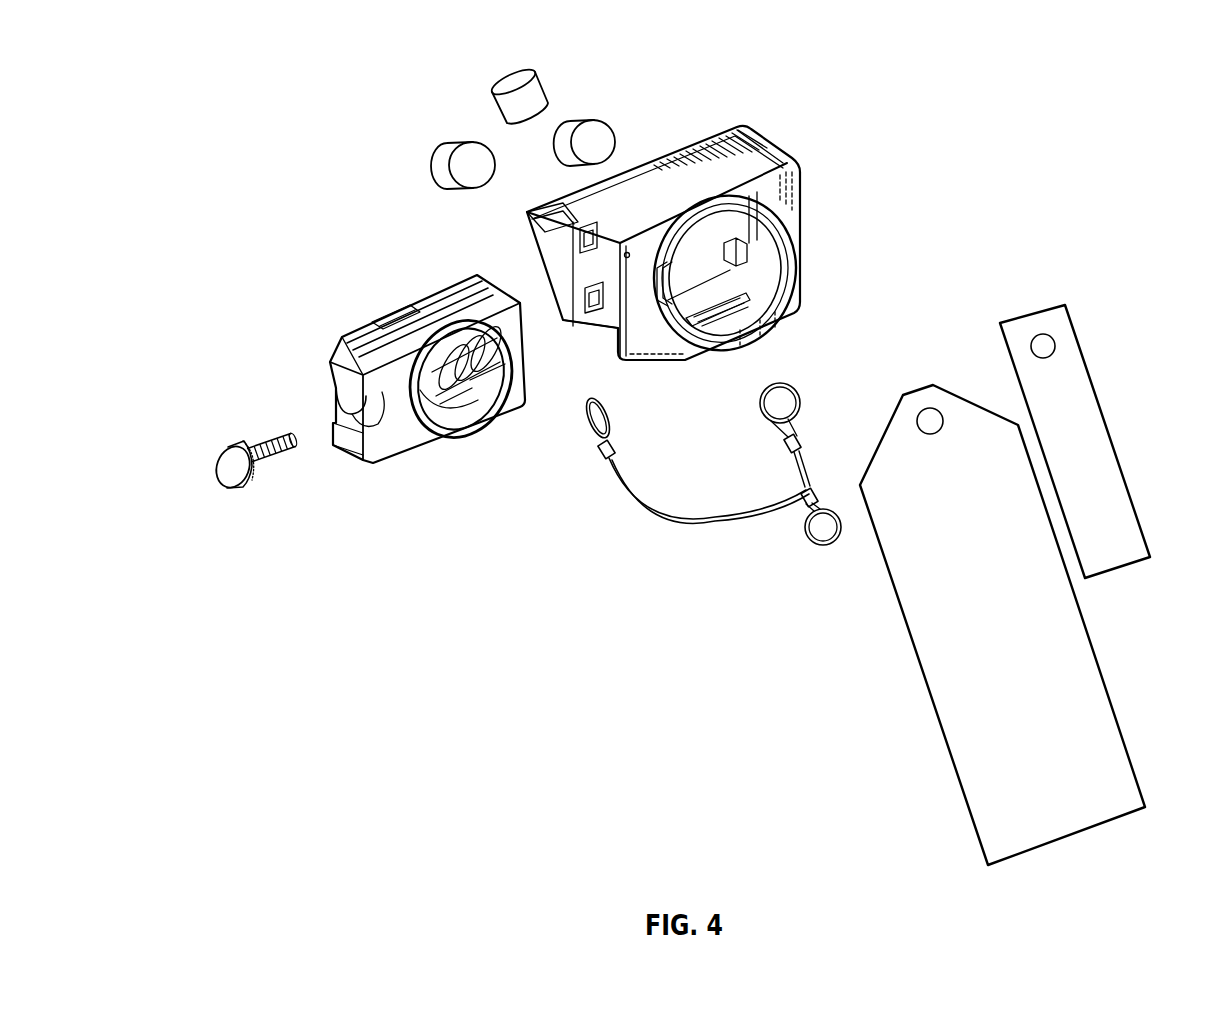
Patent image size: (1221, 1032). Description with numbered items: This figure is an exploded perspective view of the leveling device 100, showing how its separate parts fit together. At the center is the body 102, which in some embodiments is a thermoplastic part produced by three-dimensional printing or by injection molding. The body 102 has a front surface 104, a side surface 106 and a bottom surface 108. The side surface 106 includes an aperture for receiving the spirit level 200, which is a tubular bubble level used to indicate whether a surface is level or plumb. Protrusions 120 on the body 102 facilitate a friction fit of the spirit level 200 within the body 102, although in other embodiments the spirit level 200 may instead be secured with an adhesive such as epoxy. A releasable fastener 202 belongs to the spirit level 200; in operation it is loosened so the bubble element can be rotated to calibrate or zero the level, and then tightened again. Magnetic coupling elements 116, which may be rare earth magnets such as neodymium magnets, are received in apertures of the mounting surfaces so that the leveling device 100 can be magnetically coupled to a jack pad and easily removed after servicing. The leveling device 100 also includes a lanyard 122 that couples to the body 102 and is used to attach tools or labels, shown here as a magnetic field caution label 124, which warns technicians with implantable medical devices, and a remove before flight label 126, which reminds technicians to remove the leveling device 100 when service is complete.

The leveling device 100 is at (270, 156).
The body 102 is at (785, 180).
The front surface 104 is at (792, 285).
The side surface 106 is at (563, 375).
The bottom surface 108 is at (722, 362).
The magnetic coupling elements 116 is at (510, 83).
The protrusions 120 is at (583, 242).
The lanyard 122 is at (658, 512).
The magnetic field caution label 124 is at (922, 673).
The remove before flight label 126 is at (1110, 428).
The spirit level 200 is at (368, 498).
The releasable fastener 202 is at (233, 464).